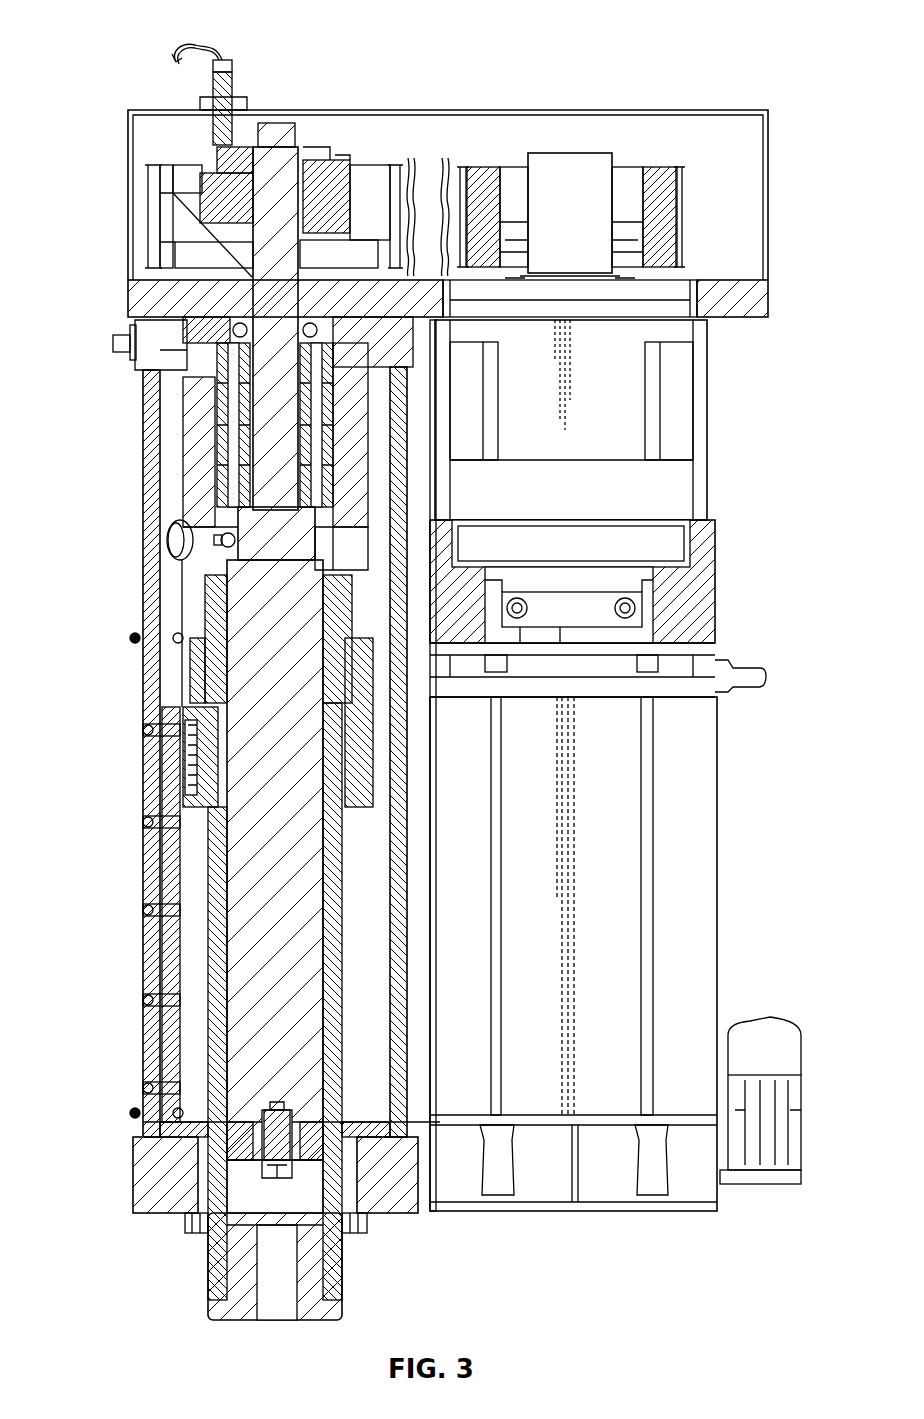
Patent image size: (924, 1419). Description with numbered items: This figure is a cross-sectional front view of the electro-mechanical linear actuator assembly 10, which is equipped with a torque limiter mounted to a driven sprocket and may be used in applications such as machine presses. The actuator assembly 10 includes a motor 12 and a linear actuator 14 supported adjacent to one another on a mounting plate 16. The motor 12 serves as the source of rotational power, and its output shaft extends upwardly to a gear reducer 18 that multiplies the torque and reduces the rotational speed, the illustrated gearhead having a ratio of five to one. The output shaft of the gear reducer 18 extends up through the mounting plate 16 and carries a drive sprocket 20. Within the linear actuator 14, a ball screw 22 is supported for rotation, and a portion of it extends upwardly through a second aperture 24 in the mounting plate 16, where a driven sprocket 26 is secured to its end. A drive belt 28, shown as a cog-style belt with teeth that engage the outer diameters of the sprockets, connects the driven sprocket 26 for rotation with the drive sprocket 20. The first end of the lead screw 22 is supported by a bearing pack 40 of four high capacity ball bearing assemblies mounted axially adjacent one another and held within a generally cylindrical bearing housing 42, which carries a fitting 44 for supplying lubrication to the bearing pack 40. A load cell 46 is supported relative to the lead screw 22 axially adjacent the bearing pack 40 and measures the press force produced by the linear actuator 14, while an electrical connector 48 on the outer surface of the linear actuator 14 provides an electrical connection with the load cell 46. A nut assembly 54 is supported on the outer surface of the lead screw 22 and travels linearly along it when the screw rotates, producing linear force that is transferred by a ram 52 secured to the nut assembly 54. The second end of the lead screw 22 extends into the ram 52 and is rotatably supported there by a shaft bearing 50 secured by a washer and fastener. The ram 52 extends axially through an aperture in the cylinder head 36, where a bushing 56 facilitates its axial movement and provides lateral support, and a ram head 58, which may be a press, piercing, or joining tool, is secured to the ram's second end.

The actuator assembly 10 is at (112, 46).
The motor 12 is at (722, 932).
The linear actuator 14 is at (190, 895).
The mounting plate 16 is at (745, 318).
The gear reducer 18 is at (688, 398).
The drive sprocket 20 is at (657, 216).
The ball screw 22 is at (250, 625).
The second aperture 24 is at (250, 275).
The driven sprocket 26 is at (178, 200).
The drive belt 28 is at (432, 165).
The cylinder head 36 is at (142, 1185).
The bearing pack 40 is at (215, 430).
The bearing housing 42 is at (200, 475).
The fitting 44 is at (225, 548).
The load cell 46 is at (165, 327).
The electrical connector 48 is at (112, 345).
The shaft bearing 50 is at (225, 1115).
The ram 52 is at (215, 975).
The nut assembly 54 is at (195, 762).
The bushing 56 is at (185, 1215).
The ram head 58 is at (210, 1298).